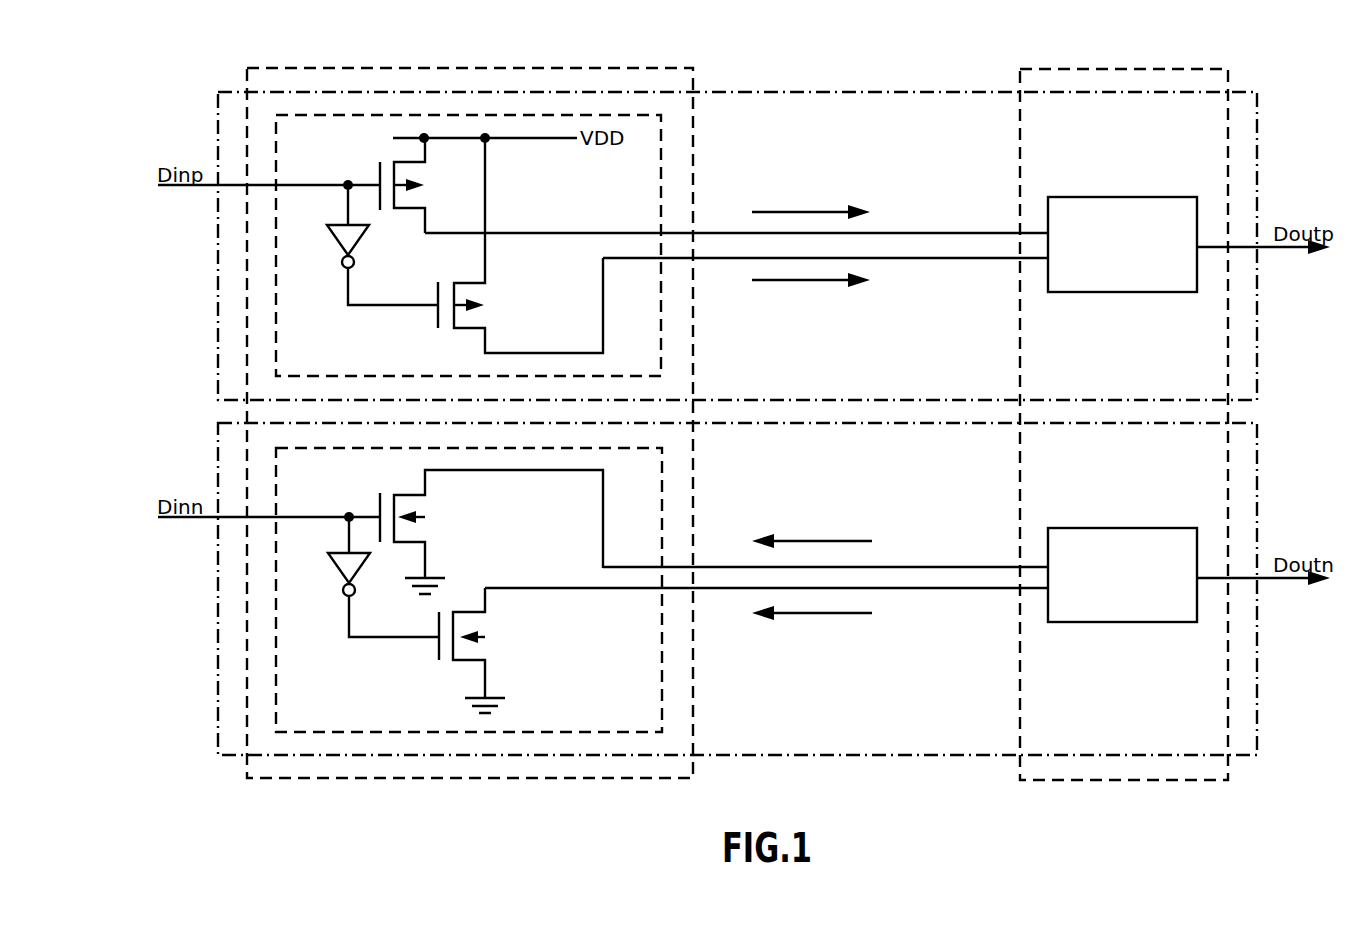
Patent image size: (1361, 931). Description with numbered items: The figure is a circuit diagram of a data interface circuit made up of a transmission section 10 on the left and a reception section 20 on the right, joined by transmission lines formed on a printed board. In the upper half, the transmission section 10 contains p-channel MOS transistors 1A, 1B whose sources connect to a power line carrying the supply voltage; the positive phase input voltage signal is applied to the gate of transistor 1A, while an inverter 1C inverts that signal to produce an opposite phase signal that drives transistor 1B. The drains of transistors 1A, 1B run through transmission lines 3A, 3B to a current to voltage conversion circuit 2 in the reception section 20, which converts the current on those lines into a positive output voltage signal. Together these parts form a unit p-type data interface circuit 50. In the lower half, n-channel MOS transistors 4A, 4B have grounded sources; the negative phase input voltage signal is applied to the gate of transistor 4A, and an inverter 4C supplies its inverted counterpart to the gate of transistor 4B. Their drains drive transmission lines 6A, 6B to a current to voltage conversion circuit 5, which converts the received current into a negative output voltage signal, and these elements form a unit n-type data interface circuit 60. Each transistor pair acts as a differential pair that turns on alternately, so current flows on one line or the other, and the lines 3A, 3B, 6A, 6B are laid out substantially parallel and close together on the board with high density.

The transmission section 10 is at (693, 78).
The reception section 20 is at (1228, 82).
The unit p-type data interface circuit 50 is at (1258, 150).
The unit n-type data interface circuit 60 is at (1258, 663).
The p-channel MOS transistor 1A is at (380, 170).
The p-channel MOS transistor 1B is at (438, 318).
The inverter 1C is at (365, 240).
The current to voltage conversion circuit 2 is at (1125, 197).
The transmission line 3A is at (900, 232).
The transmission line 3B is at (900, 262).
The n-channel MOS transistor 4A is at (380, 500).
The n-channel MOS transistor 4B is at (439, 645).
The inverter 4C is at (365, 568).
The current to voltage conversion circuit 5 is at (1125, 528).
The transmission line 6A is at (898, 564).
The transmission line 6B is at (898, 592).